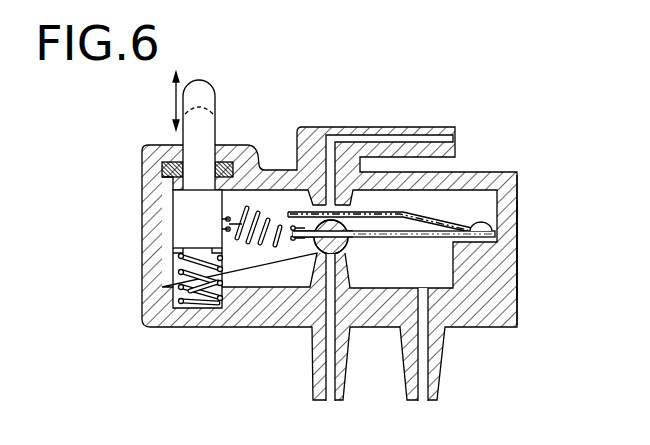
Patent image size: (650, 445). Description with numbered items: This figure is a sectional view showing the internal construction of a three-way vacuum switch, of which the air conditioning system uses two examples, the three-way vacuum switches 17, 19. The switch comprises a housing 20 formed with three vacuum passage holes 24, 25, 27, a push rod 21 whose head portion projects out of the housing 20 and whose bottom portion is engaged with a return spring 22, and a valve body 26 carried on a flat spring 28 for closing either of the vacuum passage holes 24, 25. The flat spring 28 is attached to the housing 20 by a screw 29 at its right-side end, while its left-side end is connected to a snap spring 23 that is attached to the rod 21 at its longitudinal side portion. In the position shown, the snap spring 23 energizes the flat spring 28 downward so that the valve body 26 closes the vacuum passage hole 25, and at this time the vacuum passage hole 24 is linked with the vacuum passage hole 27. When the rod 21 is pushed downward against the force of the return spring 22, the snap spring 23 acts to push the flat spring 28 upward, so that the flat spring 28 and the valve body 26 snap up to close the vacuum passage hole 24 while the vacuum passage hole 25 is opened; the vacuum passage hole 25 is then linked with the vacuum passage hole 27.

The three-way vacuum switch 17 is at (516, 192).
The three-way vacuum switch 19 is at (559, 226).
The housing 20 is at (501, 271).
The push rod 21 is at (205, 131).
The return spring 22 is at (207, 302).
The snap spring 23 is at (262, 207).
The vacuum passage hole 24 is at (391, 138).
The vacuum passage hole 25 is at (332, 377).
The valve body 26 is at (311, 252).
The vacuum passage hole 27 is at (426, 362).
The flat spring 28 is at (413, 227).
The screw 29 is at (487, 221).